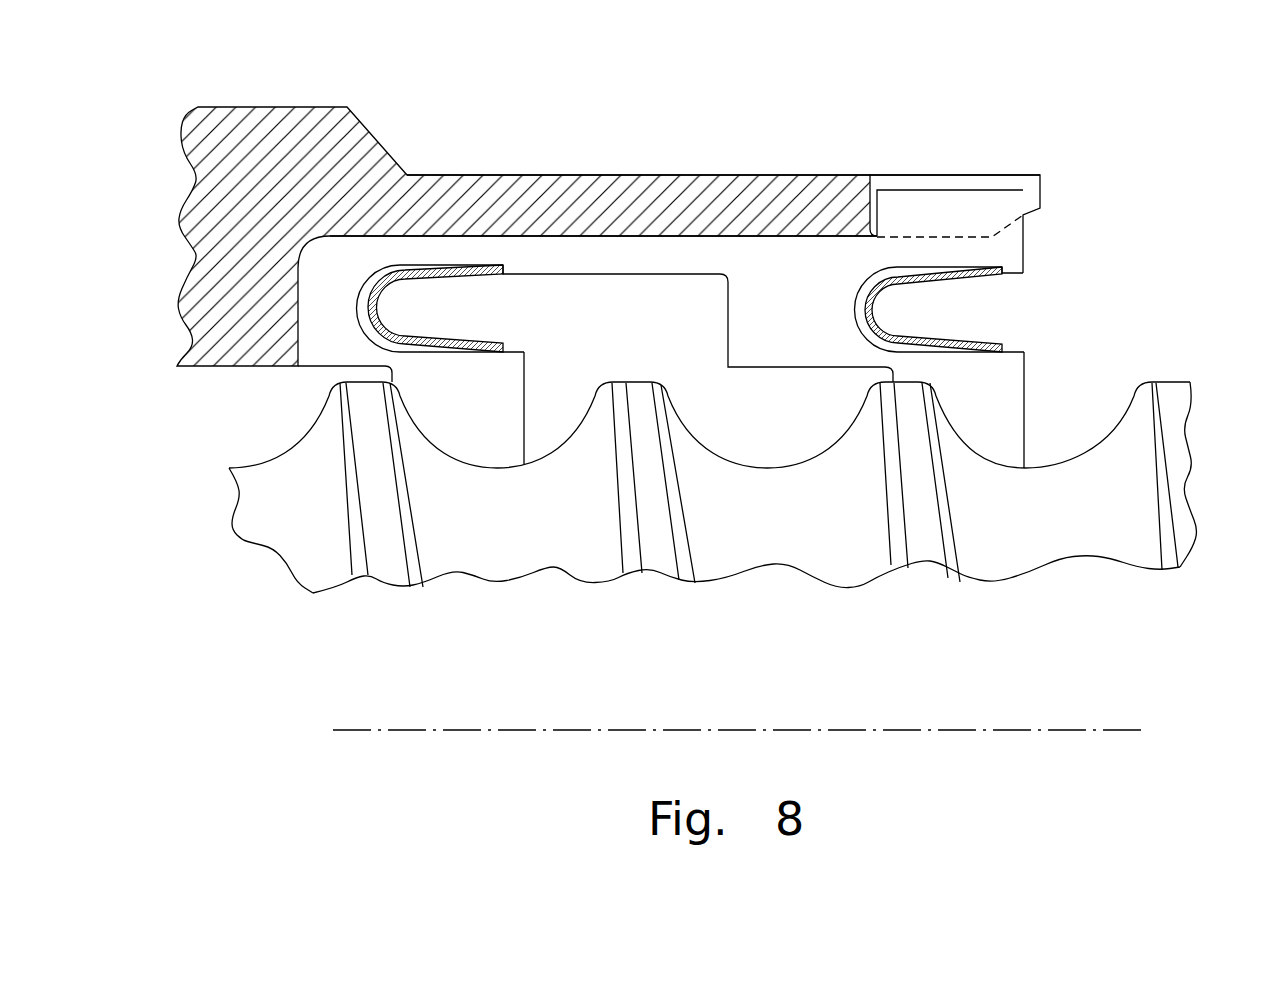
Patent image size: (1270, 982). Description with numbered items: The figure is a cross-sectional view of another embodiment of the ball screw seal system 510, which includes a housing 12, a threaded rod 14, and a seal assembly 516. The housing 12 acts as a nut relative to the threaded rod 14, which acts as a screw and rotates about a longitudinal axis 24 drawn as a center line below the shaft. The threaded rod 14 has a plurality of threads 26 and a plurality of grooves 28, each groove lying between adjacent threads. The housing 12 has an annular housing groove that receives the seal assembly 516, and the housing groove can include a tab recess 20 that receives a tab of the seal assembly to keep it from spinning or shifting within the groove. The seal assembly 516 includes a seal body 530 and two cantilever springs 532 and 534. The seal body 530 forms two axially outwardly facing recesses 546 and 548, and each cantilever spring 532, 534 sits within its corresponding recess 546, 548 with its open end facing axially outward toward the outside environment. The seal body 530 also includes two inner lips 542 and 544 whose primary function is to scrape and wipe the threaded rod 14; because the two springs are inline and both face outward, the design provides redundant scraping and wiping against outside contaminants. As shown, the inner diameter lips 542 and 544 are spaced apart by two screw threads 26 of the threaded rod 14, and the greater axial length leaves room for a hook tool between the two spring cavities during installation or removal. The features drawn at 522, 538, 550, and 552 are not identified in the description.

The housing 12 is at (262, 107).
The threaded shaft 14 is at (250, 544).
The tab recess 20 is at (878, 180).
The longitudinal axis 24 is at (780, 730).
The threads 26 is at (390, 572).
The grooves 28 is at (520, 535).
The ball screw seal system 510 is at (1117, 164).
The seal assembly 516 is at (1056, 289).
The mounting clip 522 is at (980, 190).
The seal body 530 is at (795, 282).
The cantilever spring 532 is at (950, 283).
The cantilever spring 534 is at (433, 283).
The clip cavity 538 is at (1000, 261).
The inner lip 542 is at (1005, 425).
The inner lip 544 is at (490, 430).
The recess 546 is at (858, 274).
The recess 548 is at (374, 263).
The second gap 550 is at (1040, 448).
The first gap 552 is at (537, 441).